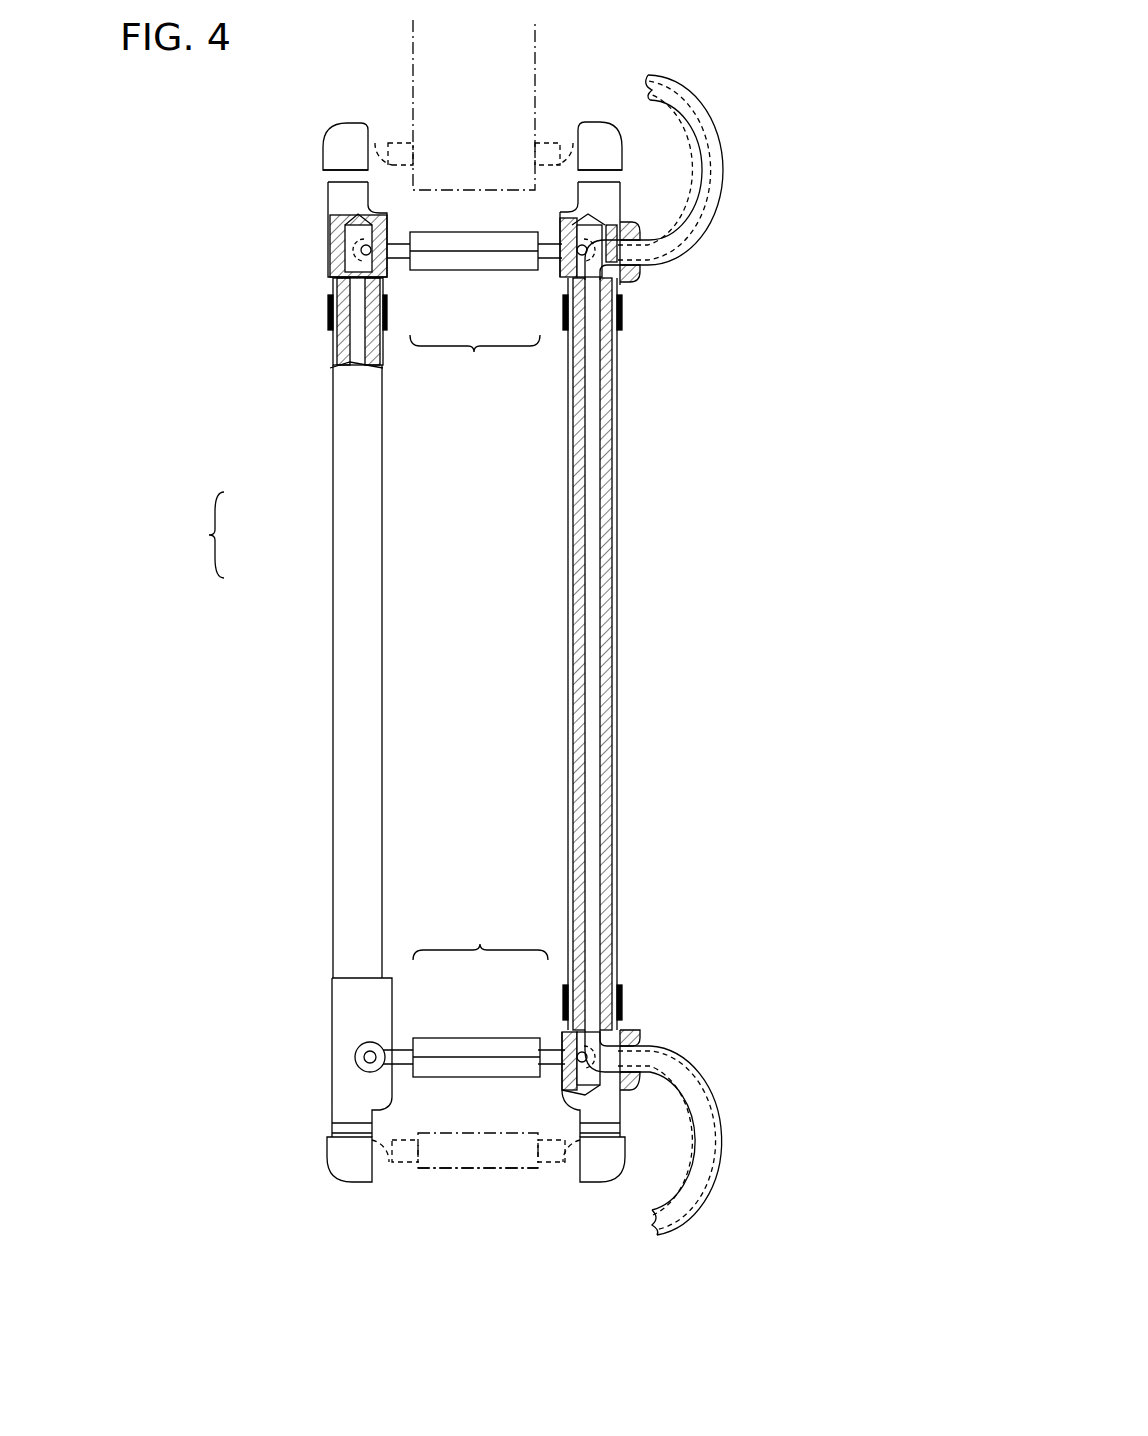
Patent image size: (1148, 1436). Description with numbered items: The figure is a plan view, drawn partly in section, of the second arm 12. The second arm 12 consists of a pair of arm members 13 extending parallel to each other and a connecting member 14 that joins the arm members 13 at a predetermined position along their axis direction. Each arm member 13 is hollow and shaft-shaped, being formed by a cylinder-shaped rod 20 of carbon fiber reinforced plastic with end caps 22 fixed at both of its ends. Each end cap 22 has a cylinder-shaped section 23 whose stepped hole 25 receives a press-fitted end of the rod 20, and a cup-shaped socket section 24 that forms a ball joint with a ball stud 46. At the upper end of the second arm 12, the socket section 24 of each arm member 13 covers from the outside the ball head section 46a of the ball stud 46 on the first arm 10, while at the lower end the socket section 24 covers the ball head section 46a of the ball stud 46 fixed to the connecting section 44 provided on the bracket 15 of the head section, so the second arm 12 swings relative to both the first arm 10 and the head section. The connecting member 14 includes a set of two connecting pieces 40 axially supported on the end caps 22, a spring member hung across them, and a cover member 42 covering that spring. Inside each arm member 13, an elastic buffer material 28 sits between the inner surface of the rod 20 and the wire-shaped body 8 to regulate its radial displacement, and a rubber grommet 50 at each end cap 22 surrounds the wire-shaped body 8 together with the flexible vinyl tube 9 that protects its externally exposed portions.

The first arm 10 is at (443, 45).
The second arm 12 is at (199, 535).
The arm member 13 is at (326, 507).
The connecting member 14 is at (479, 647).
The bracket 15 is at (428, 1170).
The rod 20 is at (350, 405).
The end cap 22 is at (328, 292).
The cylinder-shaped section 23 is at (330, 312).
The socket section 24 is at (340, 150).
The stepped hole 25 is at (345, 242).
The buffer material 28 is at (608, 517).
The connecting piece 40 is at (399, 256).
The cover member 42 is at (476, 258).
The connecting section 44 is at (475, 1168).
The ball stud 46 is at (405, 133).
The ball head section 46a is at (405, 142).
The grommet 50 is at (632, 224).
The wire-shaped body 8 is at (596, 670).
The tube 9 is at (722, 135).